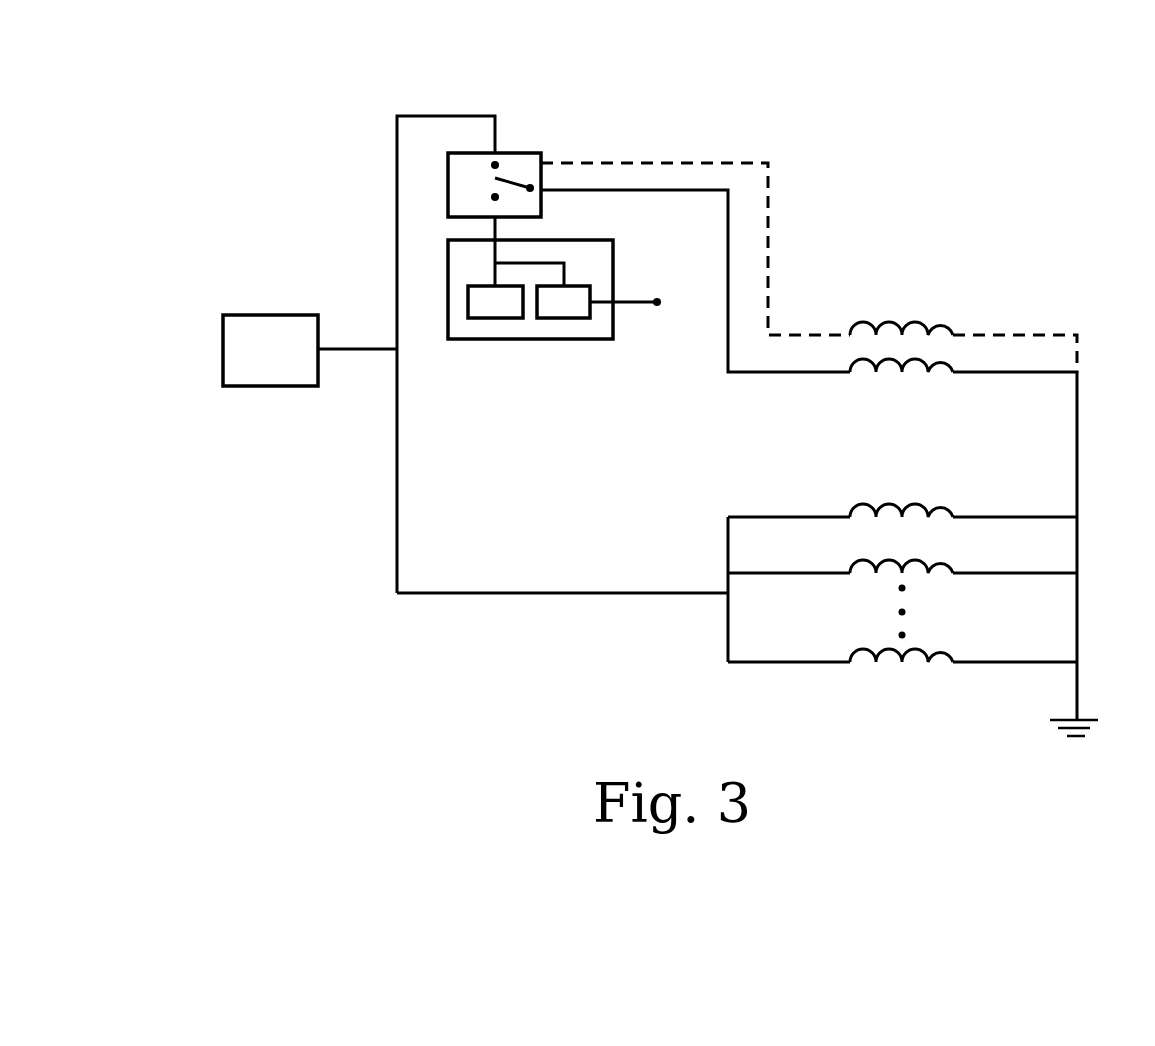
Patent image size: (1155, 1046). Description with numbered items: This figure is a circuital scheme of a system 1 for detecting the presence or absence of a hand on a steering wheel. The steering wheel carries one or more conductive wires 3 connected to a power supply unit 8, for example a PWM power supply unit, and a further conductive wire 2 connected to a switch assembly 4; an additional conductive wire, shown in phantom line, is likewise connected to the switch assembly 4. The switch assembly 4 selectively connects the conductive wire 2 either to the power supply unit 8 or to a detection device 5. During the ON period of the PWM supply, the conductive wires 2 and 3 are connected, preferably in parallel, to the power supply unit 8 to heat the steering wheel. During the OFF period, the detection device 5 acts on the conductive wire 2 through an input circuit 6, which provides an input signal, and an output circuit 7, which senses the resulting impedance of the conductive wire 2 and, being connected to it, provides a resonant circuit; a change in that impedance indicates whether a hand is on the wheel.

The system 1 is at (1003, 178).
The conductive wire 2 is at (881, 316).
The conductive wires 3 is at (890, 668).
The switch assembly 4 is at (542, 147).
The detection device 5 is at (603, 350).
The input circuit 6 is at (483, 307).
The output circuit 7 is at (557, 310).
The power supply unit 8 is at (252, 390).